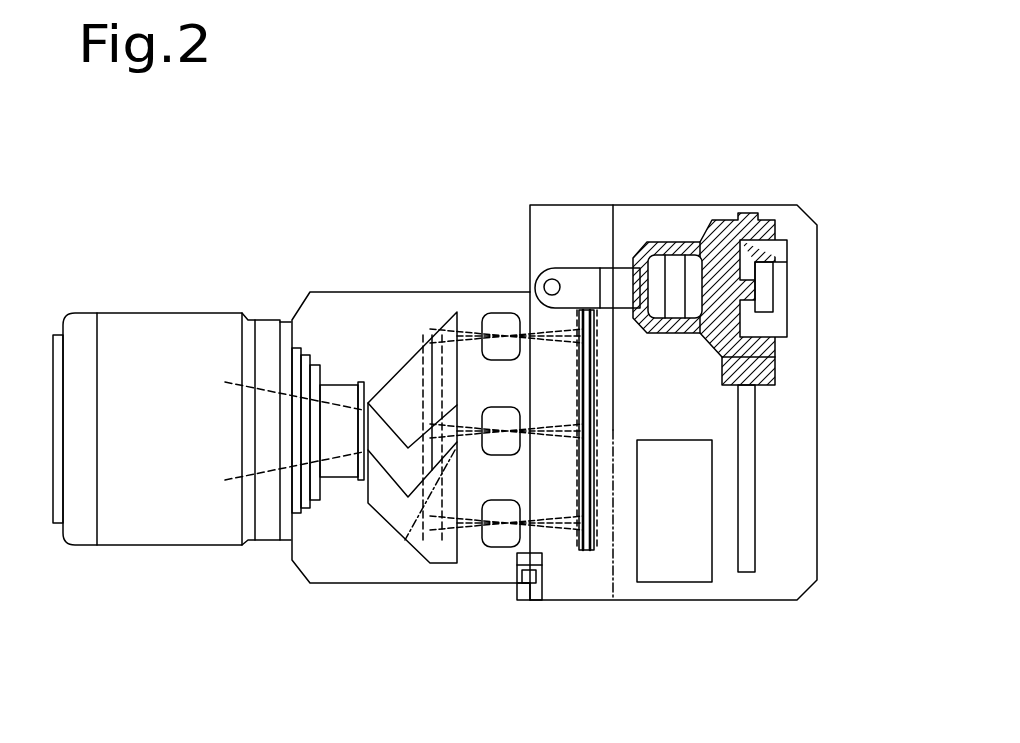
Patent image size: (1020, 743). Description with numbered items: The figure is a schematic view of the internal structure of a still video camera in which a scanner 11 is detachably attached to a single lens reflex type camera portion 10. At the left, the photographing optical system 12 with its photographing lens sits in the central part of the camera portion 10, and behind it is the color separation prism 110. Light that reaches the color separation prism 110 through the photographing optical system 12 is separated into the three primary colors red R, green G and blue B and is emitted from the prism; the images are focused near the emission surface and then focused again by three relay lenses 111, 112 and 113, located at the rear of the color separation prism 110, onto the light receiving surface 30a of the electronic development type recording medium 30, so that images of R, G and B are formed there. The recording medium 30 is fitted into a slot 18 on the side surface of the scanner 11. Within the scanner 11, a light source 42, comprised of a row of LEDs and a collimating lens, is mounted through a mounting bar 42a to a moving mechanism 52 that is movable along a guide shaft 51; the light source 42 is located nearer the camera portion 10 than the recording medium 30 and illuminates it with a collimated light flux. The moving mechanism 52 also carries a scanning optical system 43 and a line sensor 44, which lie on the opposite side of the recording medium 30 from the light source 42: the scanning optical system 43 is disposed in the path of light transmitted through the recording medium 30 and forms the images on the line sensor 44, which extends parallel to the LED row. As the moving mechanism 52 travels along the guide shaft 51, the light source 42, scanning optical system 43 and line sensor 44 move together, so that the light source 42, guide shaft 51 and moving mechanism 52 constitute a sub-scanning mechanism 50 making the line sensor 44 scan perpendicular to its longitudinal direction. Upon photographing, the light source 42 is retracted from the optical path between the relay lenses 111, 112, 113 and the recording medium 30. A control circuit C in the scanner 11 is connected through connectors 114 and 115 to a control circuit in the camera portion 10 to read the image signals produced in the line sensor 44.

The photographing optical system 12 is at (153, 530).
The camera portion 10 is at (350, 588).
The scanner 11 is at (673, 451).
The color separation prism 110 is at (403, 362).
The red R is at (473, 332).
The green G is at (425, 505).
The blue B is at (470, 490).
The relay lens 111 is at (500, 548).
The relay lens 112 is at (493, 407).
The relay lens 113 is at (506, 313).
The connector 114 is at (540, 585).
The connector 115 is at (527, 600).
The electronic development type recording medium 30 is at (644, 506).
The light receiving surface 30a is at (582, 540).
The slot 18 is at (600, 368).
The light source 42 is at (552, 279).
The mounting bar 42a is at (594, 280).
The scanning optical system 43 is at (660, 255).
The moving mechanism 52 is at (712, 237).
The sub-scanning mechanism 50 is at (713, 334).
The line sensor 44 is at (765, 290).
The guide shaft 51 is at (752, 527).
The control circuit C is at (673, 517).